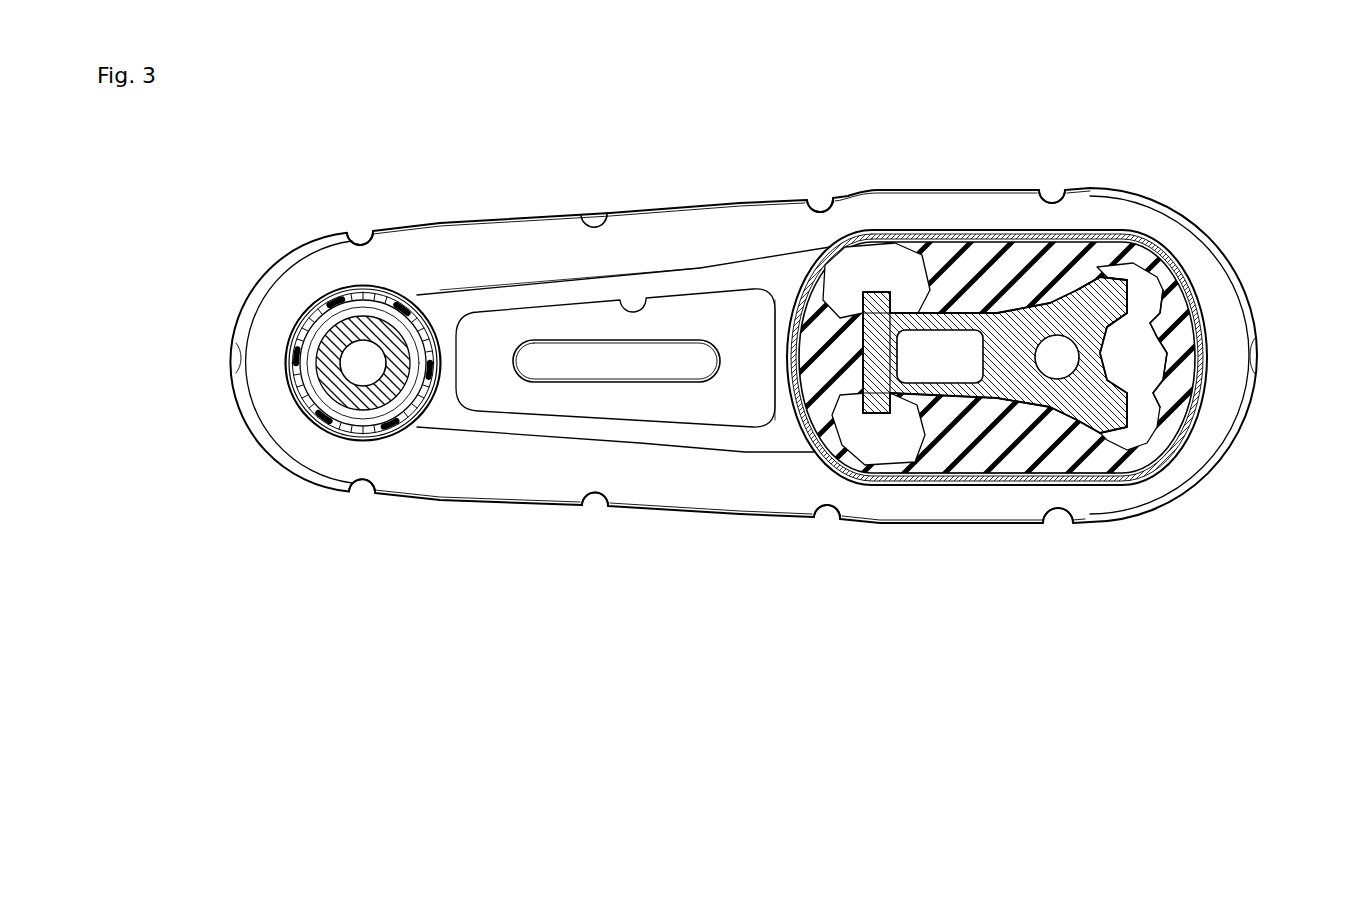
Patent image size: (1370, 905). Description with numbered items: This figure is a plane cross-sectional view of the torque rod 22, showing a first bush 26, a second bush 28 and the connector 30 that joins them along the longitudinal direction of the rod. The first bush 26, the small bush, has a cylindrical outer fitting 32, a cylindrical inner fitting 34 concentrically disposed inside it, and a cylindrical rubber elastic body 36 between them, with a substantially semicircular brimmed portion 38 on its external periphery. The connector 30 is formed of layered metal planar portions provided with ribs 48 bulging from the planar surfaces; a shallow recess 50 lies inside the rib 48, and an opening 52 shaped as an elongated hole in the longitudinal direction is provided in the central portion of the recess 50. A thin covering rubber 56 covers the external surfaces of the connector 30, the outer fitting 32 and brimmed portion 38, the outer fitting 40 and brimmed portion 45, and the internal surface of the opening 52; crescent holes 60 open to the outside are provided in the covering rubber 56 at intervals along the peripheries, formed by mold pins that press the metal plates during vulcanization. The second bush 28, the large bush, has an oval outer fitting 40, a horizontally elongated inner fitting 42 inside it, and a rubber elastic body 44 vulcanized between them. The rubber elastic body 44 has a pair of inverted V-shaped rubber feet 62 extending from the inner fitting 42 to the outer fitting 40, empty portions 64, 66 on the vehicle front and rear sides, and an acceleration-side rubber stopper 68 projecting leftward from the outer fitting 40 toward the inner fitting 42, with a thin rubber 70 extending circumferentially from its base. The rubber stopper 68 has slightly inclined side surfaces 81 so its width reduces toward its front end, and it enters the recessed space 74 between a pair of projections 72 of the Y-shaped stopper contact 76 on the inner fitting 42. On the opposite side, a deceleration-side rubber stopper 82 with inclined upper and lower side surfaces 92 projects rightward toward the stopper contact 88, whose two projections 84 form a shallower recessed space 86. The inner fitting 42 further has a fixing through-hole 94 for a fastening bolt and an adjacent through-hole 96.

The torque rod 22 is at (773, 88).
The first bush 26 is at (298, 220).
The second bush 28 is at (1092, 168).
The connector 30 is at (704, 188).
The cylindrical outer fitting 32 is at (292, 335).
The cylindrical inner fitting 34 is at (340, 433).
The rubber elastic body 36 is at (307, 420).
The brimmed portion 38 is at (257, 400).
The cylindrical outer fitting 40 is at (1142, 228).
The inner fitting 42 is at (972, 300).
The rubber elastic body 44 is at (883, 490).
The brimmed portion 45 is at (1237, 328).
The rib 48 is at (525, 295).
The recess 50 is at (634, 297).
The opening 52 is at (574, 372).
The covering rubber 56 is at (310, 300).
The crescent holes 60 is at (594, 212).
The rubber feet 62 is at (1020, 232).
The empty portion 64 is at (838, 483).
The empty portion 66 is at (1165, 490).
The rubber stopper 68 is at (1082, 365).
The thin rubber 70 is at (1175, 300).
The projections 72 is at (1210, 240).
The recessed space 74 is at (1093, 487).
The stopper contact 76 is at (1133, 283).
The side surfaces 81 is at (1165, 307).
The rubber stopper 82 is at (773, 398).
The projections 84 is at (860, 294).
The recessed space 86 is at (886, 291).
The stopper contact 88 is at (878, 426).
The side surfaces 92 is at (800, 316).
The fixing through-hole 94 is at (1029, 440).
The through-hole 96 is at (943, 467).